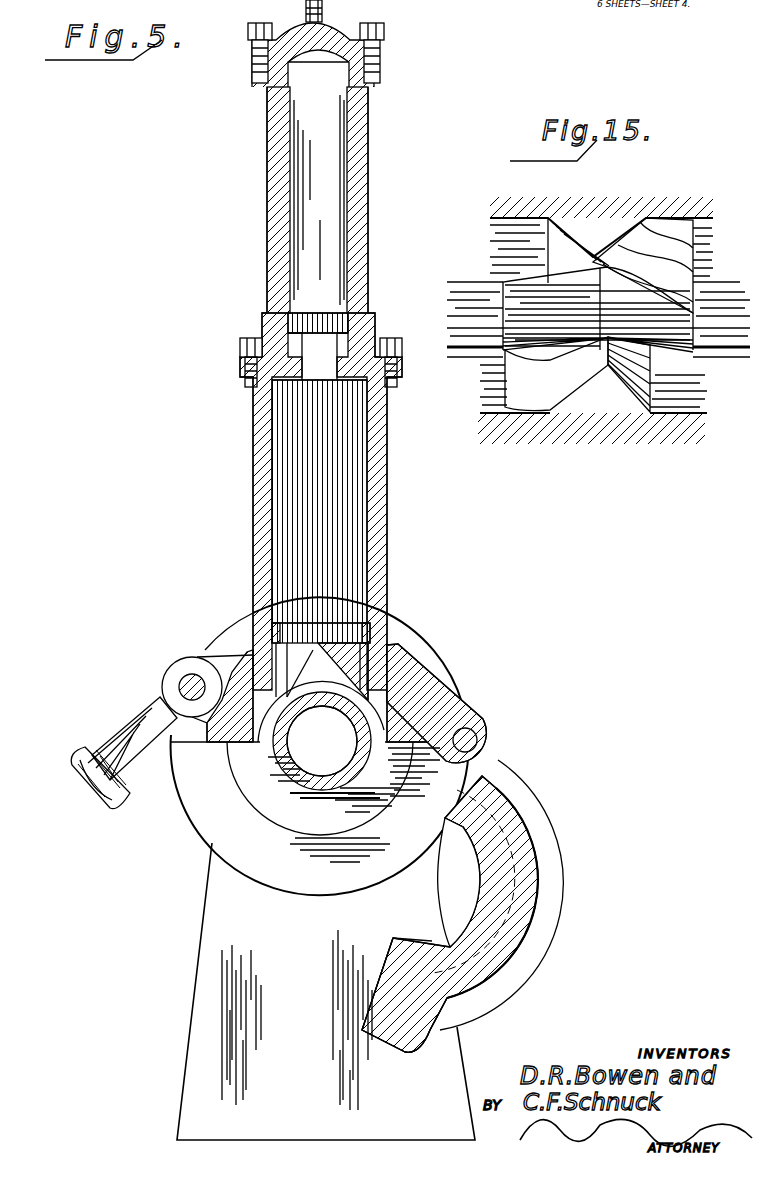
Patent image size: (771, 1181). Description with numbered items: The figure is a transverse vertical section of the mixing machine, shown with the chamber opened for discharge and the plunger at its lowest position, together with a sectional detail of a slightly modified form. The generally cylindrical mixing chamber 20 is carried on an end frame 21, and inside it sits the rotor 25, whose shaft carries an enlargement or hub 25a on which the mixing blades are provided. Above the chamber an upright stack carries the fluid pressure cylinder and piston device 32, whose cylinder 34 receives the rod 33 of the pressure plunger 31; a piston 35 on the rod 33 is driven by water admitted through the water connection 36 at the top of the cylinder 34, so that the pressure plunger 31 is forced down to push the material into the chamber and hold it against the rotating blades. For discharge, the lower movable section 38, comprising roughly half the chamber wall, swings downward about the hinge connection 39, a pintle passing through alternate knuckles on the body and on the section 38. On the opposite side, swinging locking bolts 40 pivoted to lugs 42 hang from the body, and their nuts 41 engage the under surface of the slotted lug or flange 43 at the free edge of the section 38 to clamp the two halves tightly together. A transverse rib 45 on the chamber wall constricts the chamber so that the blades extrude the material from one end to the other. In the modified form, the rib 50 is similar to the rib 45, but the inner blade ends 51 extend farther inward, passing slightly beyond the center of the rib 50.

In FIG. 5, the mixing chamber 20 is at (267, 798).
In FIG. 5, the end frames 21 is at (243, 985).
In FIG. 5, the rotor 25 is at (282, 761).
In FIG. 5, the hub 25a is at (370, 766).
In FIG. 5, the pressure plunger 31 is at (352, 622).
In FIG. 5, the fluid pressure cylinder and piston device 32 is at (321, 168).
In FIG. 5, the rod 33 is at (308, 433).
In FIG. 5, the cylinder 34 is at (358, 158).
In FIG. 5, the piston 35 is at (313, 325).
In FIG. 5, the water connection 36 is at (325, 6).
In FIG. 5, the lower movable section 38 is at (523, 878).
In FIG. 5, the hinge connection 39 is at (478, 732).
In FIG. 5, the swinging locking bolts 40 is at (132, 724).
In FIG. 5, the nuts 41 is at (72, 757).
In FIG. 5, the lugs 42 is at (182, 663).
In FIG. 5, the slotted lug or flange 43 is at (430, 1038).
In FIG. 5, the transverse rib 45 is at (190, 790).
In FIG. 15, the rib 50 is at (597, 400).
In FIG. 15, the inner blade ends 51 is at (592, 262).